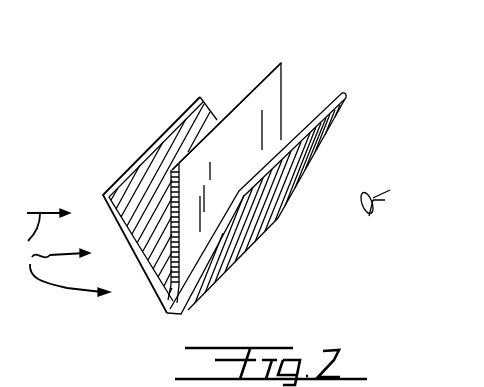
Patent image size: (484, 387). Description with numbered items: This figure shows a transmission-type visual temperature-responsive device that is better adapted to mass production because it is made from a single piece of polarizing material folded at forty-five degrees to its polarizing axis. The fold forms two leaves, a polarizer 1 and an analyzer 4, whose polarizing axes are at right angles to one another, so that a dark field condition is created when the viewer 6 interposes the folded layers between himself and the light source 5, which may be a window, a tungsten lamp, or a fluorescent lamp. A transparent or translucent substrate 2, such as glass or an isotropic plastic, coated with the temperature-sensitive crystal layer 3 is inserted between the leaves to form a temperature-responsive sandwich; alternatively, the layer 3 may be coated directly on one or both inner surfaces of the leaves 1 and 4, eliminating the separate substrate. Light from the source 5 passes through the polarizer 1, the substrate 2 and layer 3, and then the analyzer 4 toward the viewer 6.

The polarizer 1 is at (205, 97).
The substrate 2 is at (270, 62).
The crystal layer 3 is at (283, 63).
The analyzer 4 is at (340, 92).
The light source 5 is at (59, 252).
The viewer 6 is at (390, 190).